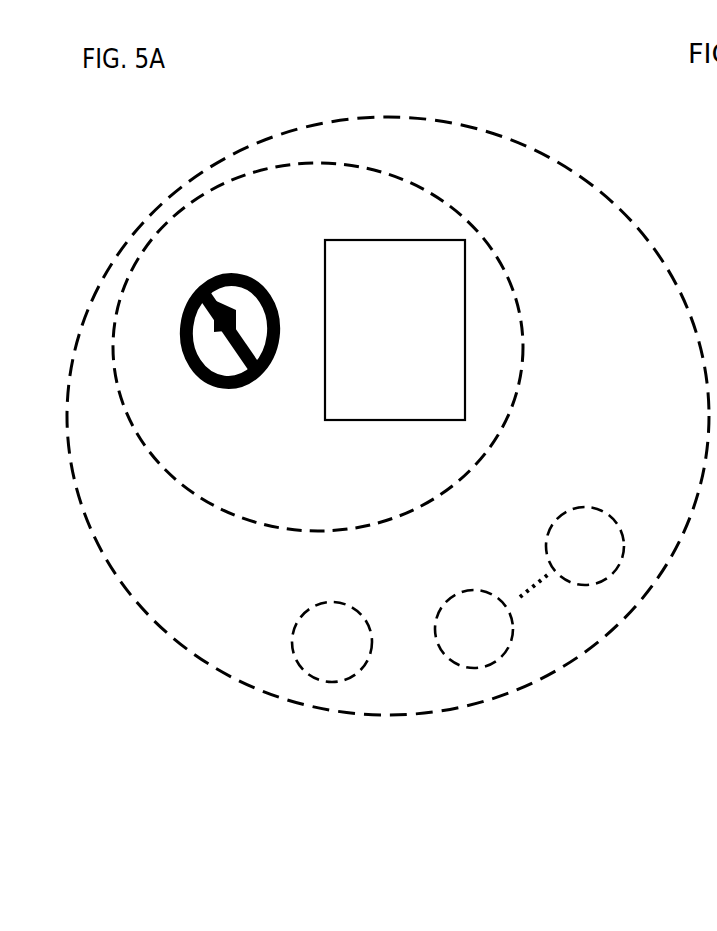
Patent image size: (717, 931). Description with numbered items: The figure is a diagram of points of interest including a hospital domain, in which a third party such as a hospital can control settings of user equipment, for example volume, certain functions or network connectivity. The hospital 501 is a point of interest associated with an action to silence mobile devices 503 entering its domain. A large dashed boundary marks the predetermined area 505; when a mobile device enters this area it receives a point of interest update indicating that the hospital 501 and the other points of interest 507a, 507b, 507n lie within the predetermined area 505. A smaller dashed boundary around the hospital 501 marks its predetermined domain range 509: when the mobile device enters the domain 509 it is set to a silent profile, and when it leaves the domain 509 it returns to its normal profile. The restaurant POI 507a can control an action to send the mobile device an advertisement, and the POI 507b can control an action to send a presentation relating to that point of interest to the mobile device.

The hospital 501 is at (390, 236).
The action to silence mobile devices 503 is at (235, 262).
The predetermined area 505 is at (161, 630).
The restaurant POI 507a is at (292, 642).
The POI 507b is at (475, 590).
The POI 507n is at (612, 520).
The predetermined domain range 509 is at (522, 350).